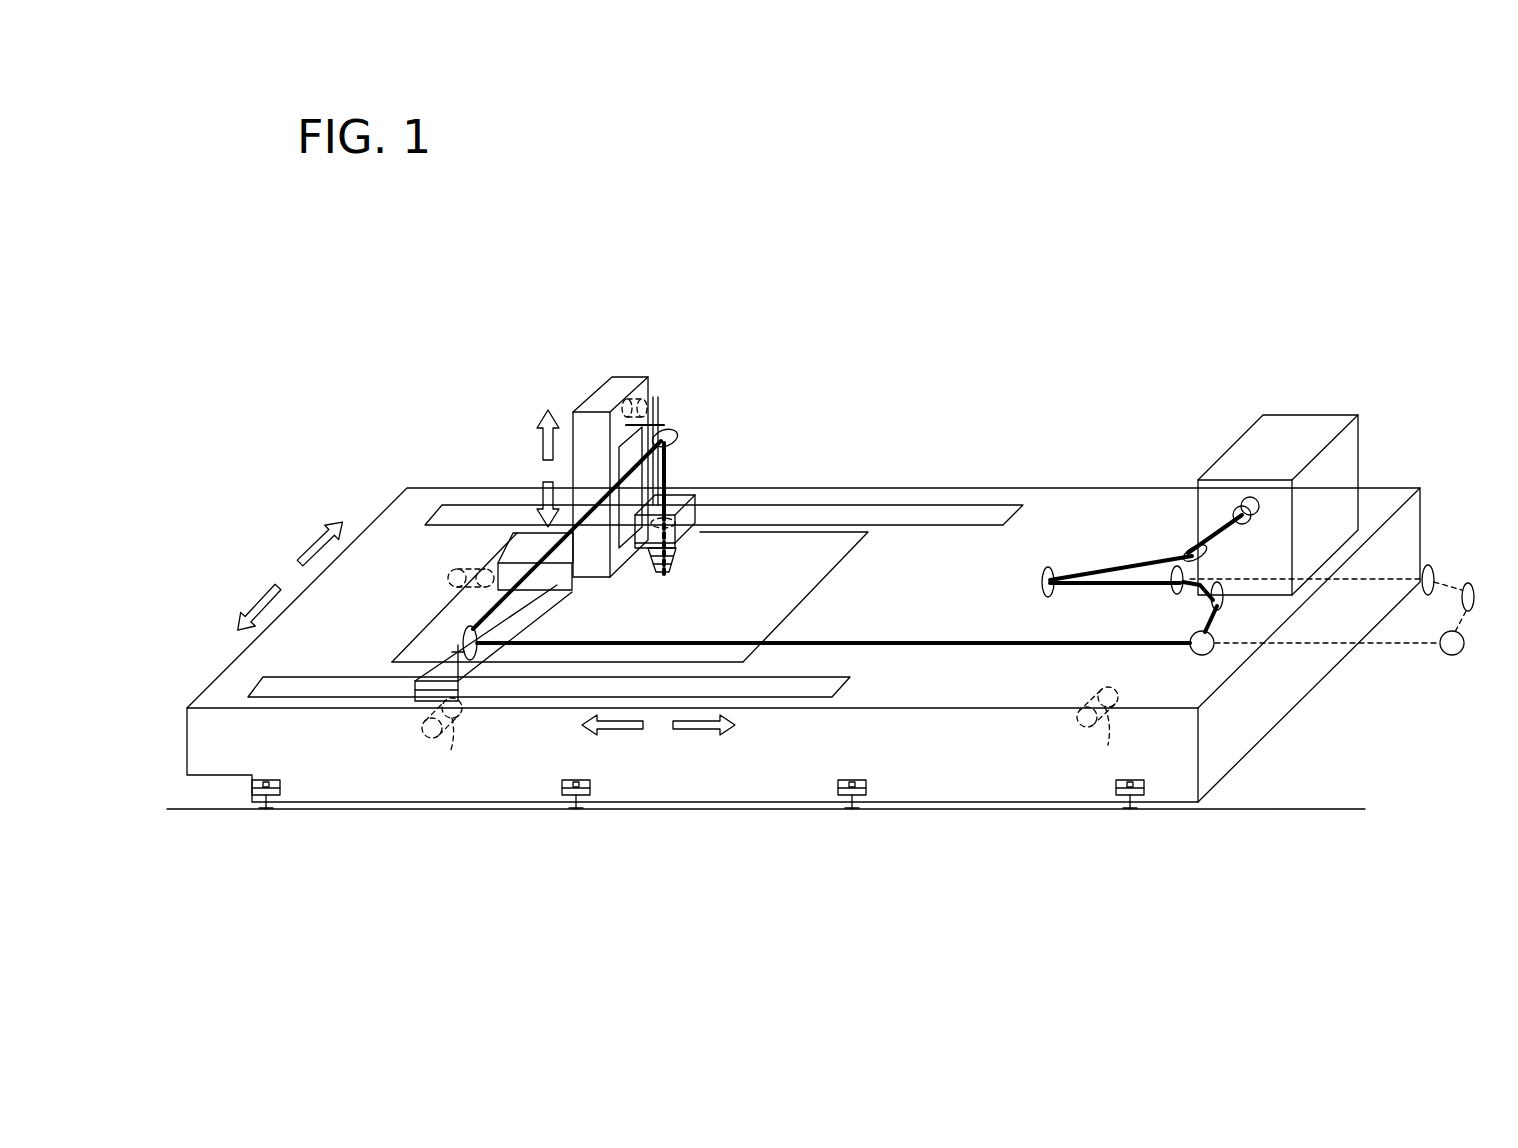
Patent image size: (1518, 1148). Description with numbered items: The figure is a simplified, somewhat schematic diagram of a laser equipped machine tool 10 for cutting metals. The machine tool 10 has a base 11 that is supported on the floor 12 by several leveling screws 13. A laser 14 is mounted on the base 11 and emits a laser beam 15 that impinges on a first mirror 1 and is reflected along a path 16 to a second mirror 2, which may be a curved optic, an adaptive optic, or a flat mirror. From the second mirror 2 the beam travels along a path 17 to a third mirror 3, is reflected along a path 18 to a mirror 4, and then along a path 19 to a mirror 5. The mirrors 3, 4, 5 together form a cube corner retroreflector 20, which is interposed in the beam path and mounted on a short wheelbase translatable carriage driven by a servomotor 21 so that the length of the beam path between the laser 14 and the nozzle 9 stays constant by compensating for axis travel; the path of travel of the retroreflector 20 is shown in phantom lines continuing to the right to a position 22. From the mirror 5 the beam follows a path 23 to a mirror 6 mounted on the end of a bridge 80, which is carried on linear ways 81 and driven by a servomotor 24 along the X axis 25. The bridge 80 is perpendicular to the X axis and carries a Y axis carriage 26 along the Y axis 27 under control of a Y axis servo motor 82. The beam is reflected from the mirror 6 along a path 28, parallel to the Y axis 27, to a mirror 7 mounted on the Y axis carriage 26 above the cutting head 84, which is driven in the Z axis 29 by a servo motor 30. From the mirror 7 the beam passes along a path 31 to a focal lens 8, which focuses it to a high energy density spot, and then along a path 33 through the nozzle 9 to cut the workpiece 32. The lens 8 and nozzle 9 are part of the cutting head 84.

The first mirror 1 is at (1182, 553).
The second mirror 2 is at (1042, 568).
The third mirror 3 is at (1175, 593).
The mirror 4 is at (1222, 592).
The mirror 5 is at (1205, 652).
The mirror 6 is at (478, 655).
The mirror 7 is at (676, 432).
The focal lens 8 is at (690, 508).
The nozzle 9 is at (677, 561).
The laser equipped machine tool 10 is at (340, 497).
The base 11 is at (297, 757).
The floor 12 is at (1261, 792).
The leveling screws 13 is at (252, 795).
The laser 14 is at (1311, 505).
The laser beam 15 is at (1220, 530).
The path 16 is at (1120, 563).
The path 17 is at (1112, 585).
The path 18 is at (1203, 585).
The path 19 is at (1213, 613).
The cube corner retroreflector 20 is at (1270, 654).
The servomotor 21 is at (1099, 731).
The position 22 is at (1451, 675).
The path 23 is at (867, 637).
The servomotor 24 is at (444, 741).
The X axis 25 is at (693, 727).
The Y axis carriage 26 is at (587, 557).
The Y axis 27 is at (260, 590).
The path 28 is at (497, 593).
The Z axis 29 is at (543, 432).
The servo motor 30 is at (640, 410).
The path 31 is at (668, 463).
The workpiece 32 is at (724, 627).
The path 33 is at (687, 541).
The bridge 80 is at (512, 617).
The linear ways 81 is at (913, 512).
The servo motor 82 is at (465, 567).
The cutting head 84 is at (673, 500).